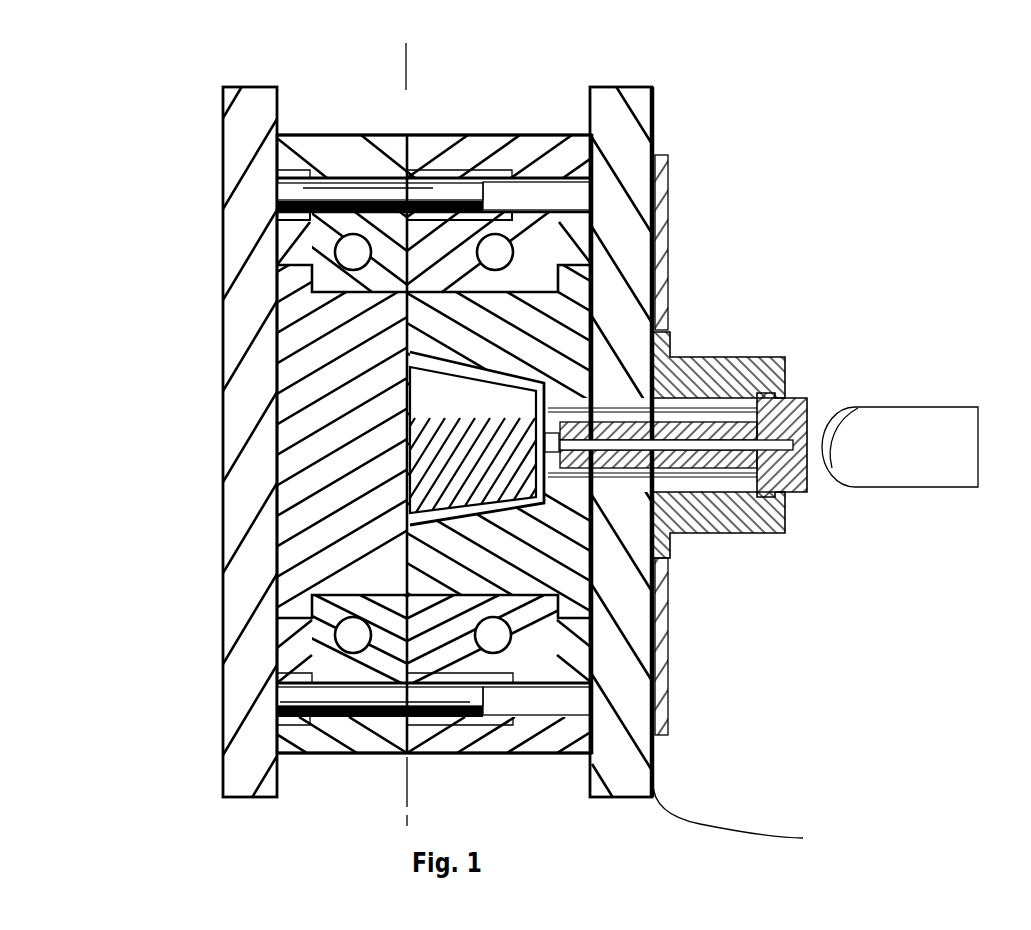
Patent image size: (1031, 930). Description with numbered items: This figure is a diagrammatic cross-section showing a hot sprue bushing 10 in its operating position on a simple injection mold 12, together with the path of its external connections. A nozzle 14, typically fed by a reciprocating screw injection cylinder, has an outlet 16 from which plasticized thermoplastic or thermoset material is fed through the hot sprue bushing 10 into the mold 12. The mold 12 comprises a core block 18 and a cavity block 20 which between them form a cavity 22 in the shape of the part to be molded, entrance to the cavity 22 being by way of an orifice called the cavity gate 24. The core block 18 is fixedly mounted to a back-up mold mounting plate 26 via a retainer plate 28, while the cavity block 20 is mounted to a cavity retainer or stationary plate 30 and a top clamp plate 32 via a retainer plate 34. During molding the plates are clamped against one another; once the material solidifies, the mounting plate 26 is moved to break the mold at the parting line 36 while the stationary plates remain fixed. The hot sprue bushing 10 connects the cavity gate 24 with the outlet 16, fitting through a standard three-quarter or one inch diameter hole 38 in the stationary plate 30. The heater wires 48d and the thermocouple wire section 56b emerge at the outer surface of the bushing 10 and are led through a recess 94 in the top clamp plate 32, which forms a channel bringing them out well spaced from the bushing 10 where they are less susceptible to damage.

The hot sprue bushing 10 is at (563, 430).
The injection mold 12 is at (462, 430).
The nozzle 14 is at (900, 417).
The outlet 16 is at (830, 446).
The core block 18 is at (295, 372).
The cavity block 20 is at (582, 312).
The cavity 22 is at (490, 520).
The cavity gate 24 is at (545, 385).
The back-up mold mounting plate 26 is at (222, 173).
The retainer plate 28 is at (326, 222).
The stationary plate 30 is at (652, 141).
The top clamp plate 32 is at (698, 445).
The retainer plate 34 is at (548, 222).
The parting line 36 is at (397, 120).
The hole 38 is at (640, 412).
The recess 94 is at (658, 703).
The wires 48d is at (736, 810).
The thermocouple lead wire 56b is at (702, 818).